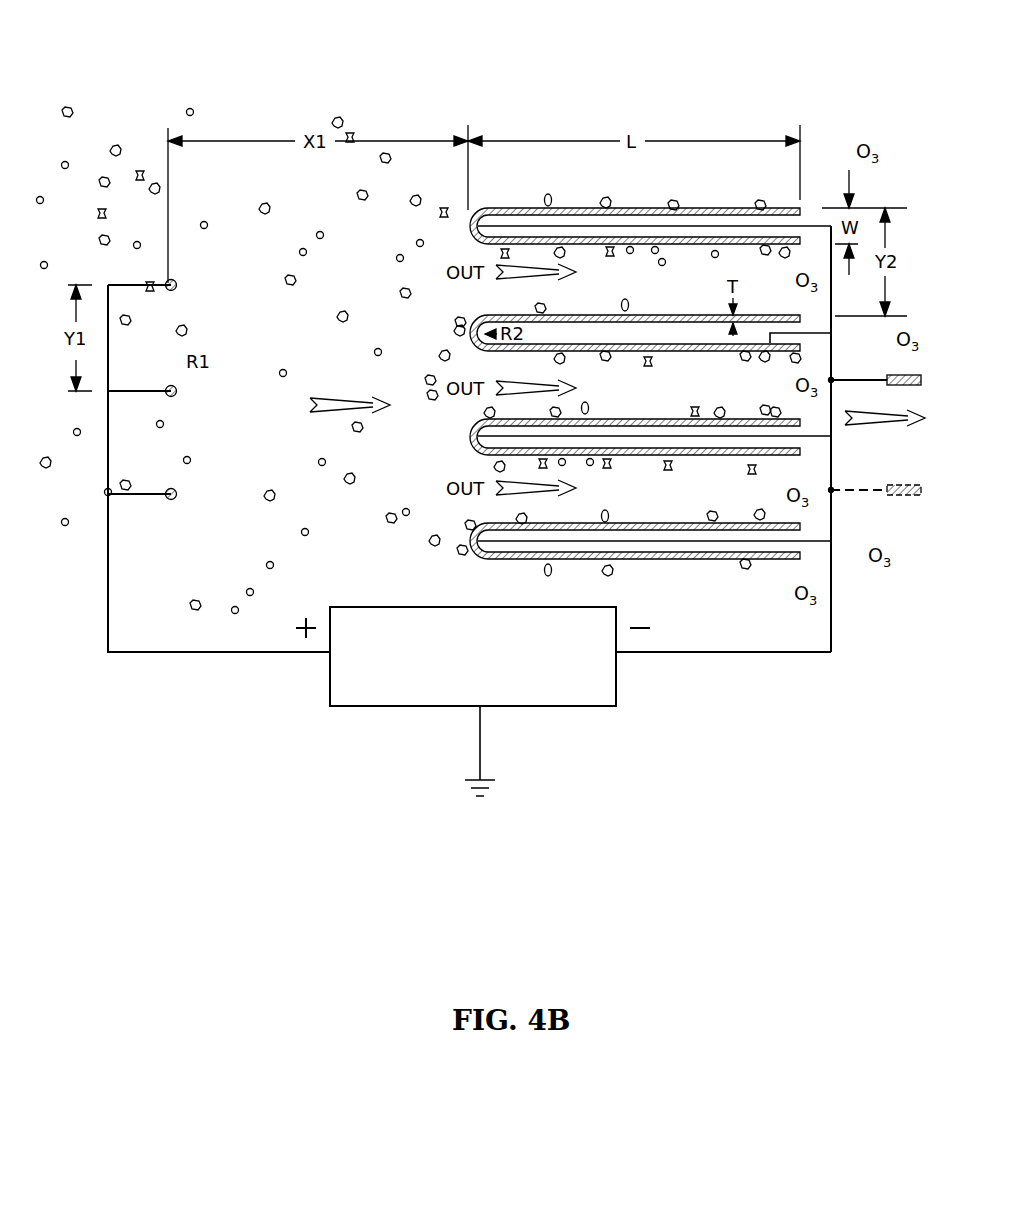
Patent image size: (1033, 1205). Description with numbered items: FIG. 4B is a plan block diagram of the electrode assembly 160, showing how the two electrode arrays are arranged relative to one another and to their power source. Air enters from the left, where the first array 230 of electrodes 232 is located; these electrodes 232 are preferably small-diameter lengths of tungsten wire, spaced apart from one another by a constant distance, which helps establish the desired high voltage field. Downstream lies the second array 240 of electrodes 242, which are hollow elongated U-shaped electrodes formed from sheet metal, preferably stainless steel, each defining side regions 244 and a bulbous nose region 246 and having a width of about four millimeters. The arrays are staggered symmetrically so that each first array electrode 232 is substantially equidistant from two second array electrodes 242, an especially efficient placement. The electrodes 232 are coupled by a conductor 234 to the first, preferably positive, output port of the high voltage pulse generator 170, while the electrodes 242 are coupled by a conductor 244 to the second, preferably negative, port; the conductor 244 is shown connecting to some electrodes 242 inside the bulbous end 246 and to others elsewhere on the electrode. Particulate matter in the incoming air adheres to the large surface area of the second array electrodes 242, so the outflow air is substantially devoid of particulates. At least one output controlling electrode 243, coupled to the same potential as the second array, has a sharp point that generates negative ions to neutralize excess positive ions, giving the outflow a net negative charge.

The electrode assembly 160 is at (182, 62).
The high voltage pulse generator 170 is at (403, 606).
The first array 230 is at (268, 332).
The electrodes 232 is at (176, 282).
The conductor 234 is at (110, 603).
The second array 240 is at (414, 332).
The electrodes 242 is at (715, 202).
The output controlling electrode 243 is at (906, 373).
The conductor 244 is at (637, 207).
The bulbous nose region 246 is at (484, 207).